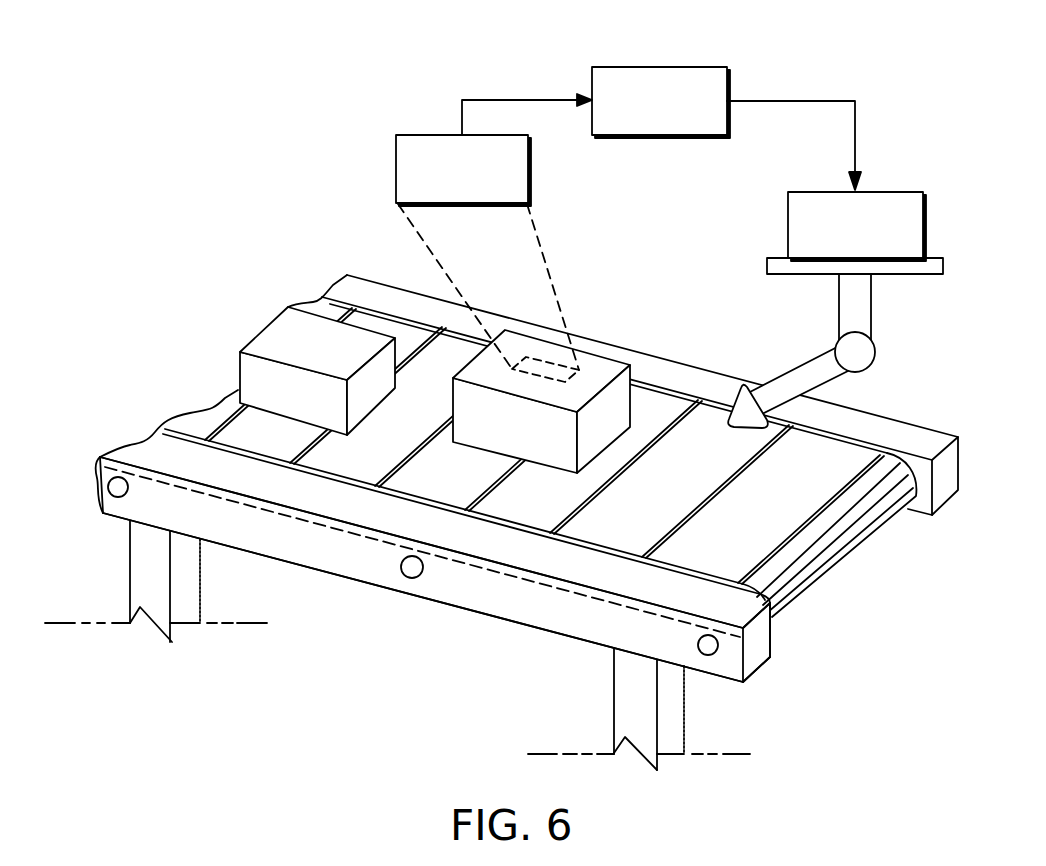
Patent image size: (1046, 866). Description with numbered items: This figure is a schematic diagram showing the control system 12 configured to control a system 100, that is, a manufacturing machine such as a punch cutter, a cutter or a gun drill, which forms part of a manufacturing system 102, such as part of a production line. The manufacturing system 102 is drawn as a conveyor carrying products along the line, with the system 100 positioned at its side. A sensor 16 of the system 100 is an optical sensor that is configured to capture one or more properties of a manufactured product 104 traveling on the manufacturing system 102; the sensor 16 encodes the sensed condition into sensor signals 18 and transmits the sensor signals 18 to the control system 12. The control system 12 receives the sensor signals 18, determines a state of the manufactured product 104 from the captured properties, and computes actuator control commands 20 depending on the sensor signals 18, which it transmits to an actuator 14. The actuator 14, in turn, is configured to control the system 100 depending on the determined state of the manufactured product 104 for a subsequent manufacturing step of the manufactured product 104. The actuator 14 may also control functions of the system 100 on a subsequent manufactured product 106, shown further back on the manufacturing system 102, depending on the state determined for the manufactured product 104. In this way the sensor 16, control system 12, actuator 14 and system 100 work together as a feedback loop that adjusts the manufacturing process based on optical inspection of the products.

The control system 12 is at (658, 67).
The actuator 14 is at (897, 192).
The sensor 16 is at (396, 168).
The sensor signals 18 is at (527, 100).
The actuator control commands 20 is at (789, 101).
The system 100 is at (800, 367).
The manufacturing system 102 is at (846, 571).
The manufactured product 104 is at (587, 368).
The subsequent manufactured product 106 is at (270, 338).